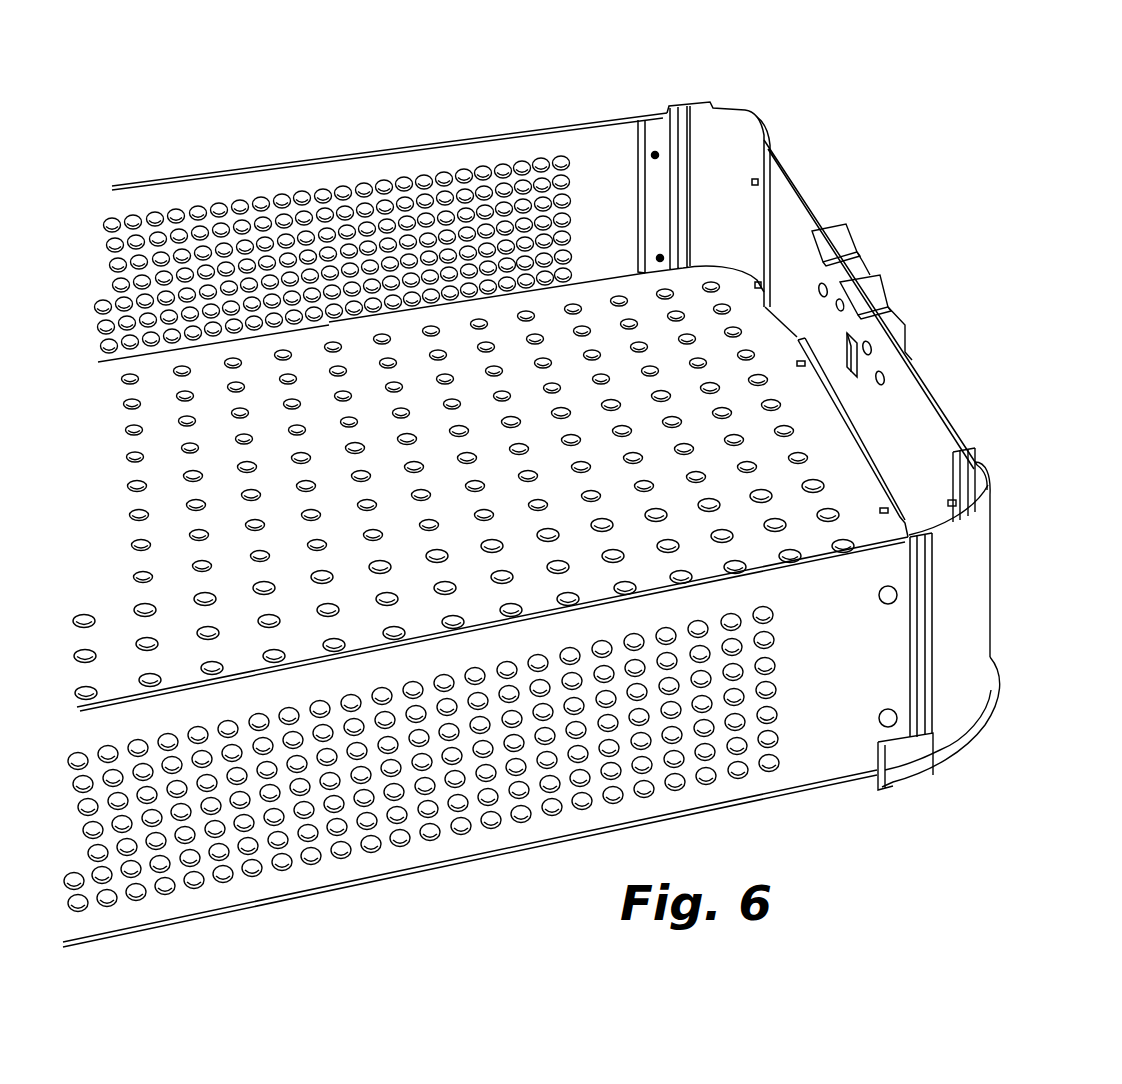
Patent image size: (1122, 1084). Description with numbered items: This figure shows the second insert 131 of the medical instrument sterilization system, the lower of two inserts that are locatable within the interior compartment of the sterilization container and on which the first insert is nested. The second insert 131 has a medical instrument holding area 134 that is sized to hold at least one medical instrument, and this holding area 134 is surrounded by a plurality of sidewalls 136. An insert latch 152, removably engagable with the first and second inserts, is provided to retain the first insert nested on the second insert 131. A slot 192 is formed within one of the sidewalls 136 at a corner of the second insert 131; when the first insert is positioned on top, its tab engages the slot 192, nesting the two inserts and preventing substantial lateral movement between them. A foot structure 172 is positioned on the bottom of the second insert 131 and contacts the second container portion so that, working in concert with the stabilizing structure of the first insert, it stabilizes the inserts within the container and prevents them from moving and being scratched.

The second insert 131 is at (962, 314).
The medical instrument holding area 134 is at (722, 378).
The sidewalls 136 is at (593, 155).
The insert latch 152 is at (872, 297).
The slot 192 is at (993, 492).
The foot structure 172 is at (970, 743).